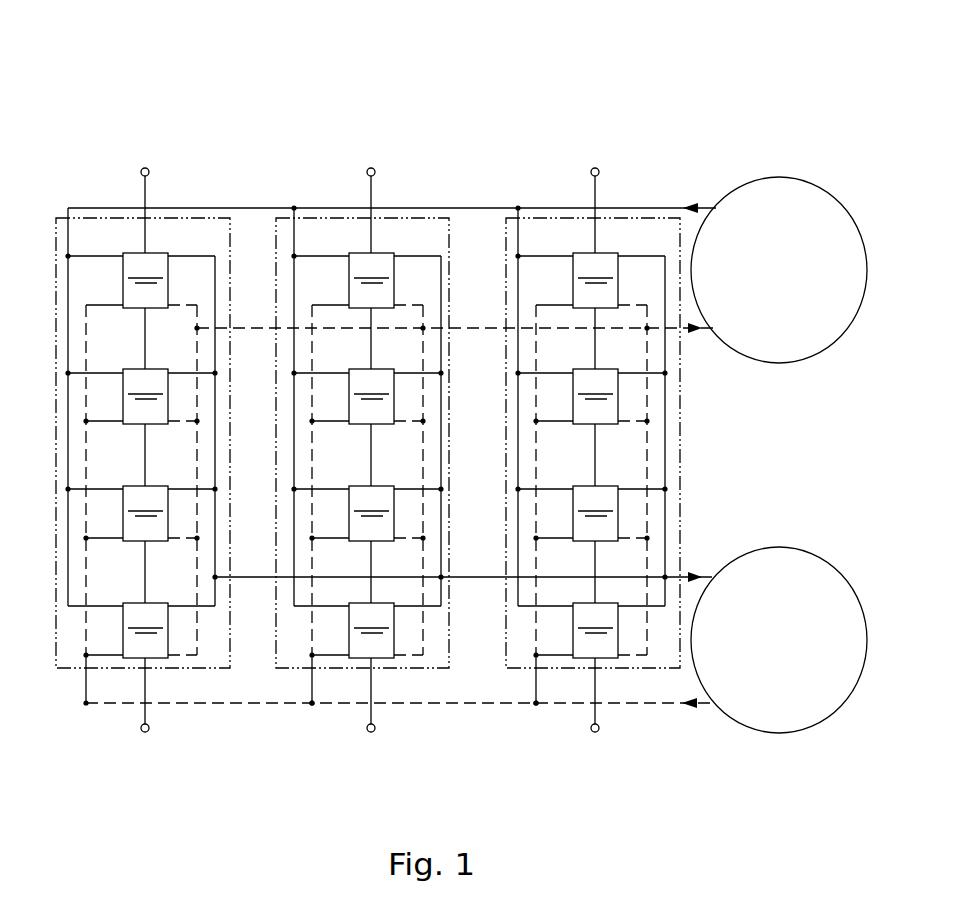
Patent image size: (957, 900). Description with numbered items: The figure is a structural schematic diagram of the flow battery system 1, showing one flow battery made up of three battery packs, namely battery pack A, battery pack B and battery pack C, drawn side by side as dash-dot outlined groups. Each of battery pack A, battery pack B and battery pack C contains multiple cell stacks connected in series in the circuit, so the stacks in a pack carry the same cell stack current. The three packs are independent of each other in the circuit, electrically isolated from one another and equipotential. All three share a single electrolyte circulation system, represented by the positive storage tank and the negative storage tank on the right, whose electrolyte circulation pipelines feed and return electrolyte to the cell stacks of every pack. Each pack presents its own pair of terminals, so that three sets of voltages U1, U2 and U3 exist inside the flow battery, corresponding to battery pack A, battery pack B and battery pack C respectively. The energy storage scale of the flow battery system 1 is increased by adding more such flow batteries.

The flow battery system 1 is at (461, 380).
The battery pack A is at (182, 233).
The battery pack B is at (413, 233).
The battery pack C is at (637, 233).
The voltage of battery pack A U1 is at (148, 452).
The voltage of battery pack B U2 is at (374, 452).
The voltage of battery pack C U3 is at (598, 452).